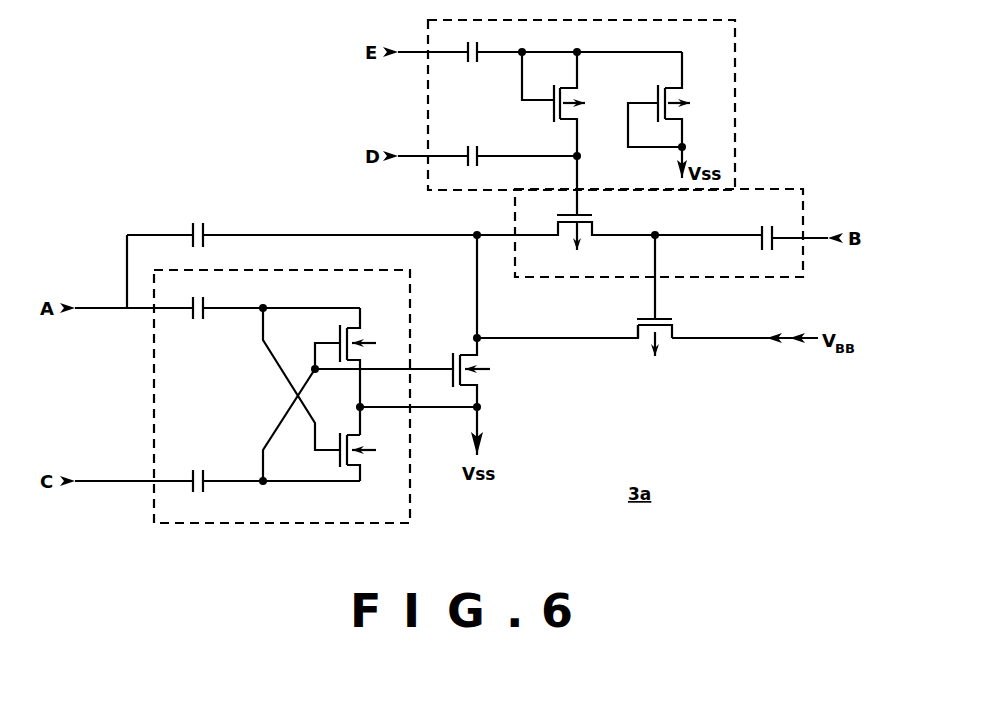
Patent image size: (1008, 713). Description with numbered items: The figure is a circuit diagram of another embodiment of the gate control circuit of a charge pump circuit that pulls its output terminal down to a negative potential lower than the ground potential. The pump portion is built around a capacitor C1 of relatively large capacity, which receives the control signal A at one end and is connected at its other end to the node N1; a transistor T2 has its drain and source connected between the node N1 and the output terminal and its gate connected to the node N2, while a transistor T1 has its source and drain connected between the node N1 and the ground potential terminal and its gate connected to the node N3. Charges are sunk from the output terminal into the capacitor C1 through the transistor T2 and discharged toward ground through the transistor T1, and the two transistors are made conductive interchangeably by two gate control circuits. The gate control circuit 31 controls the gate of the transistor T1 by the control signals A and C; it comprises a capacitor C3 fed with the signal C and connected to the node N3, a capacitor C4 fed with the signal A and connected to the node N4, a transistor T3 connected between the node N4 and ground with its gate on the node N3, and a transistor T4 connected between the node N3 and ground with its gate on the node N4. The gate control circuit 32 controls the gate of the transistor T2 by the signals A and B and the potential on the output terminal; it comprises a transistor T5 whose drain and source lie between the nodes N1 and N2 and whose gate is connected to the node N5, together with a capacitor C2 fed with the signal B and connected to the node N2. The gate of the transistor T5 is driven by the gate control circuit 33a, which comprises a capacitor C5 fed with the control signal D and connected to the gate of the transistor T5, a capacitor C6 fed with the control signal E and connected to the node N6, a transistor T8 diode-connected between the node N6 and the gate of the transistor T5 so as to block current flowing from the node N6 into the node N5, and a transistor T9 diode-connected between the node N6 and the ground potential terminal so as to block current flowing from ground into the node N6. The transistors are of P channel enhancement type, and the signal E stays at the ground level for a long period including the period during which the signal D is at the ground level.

The capacitor C1 is at (199, 217).
The capacitor C2 is at (741, 223).
The capacitor C3 is at (198, 464).
The capacitor C4 is at (198, 322).
The capacitor C5 is at (473, 138).
The capacitor C6 is at (473, 65).
The transistor T1 is at (455, 358).
The transistor T2 is at (674, 329).
The transistor T3 is at (364, 335).
The transistor T4 is at (364, 470).
The transistor T5 is at (585, 240).
The transistor T8 is at (574, 92).
The transistor T9 is at (658, 88).
The node N1 is at (477, 228).
The node N2 is at (655, 228).
The node N3 is at (266, 484).
The node N4 is at (266, 305).
The node N5 is at (581, 157).
The node N6 is at (580, 50).
The gate control circuit 31 is at (282, 420).
The gate control circuit 32 is at (783, 189).
The gate control circuit 33a is at (737, 110).